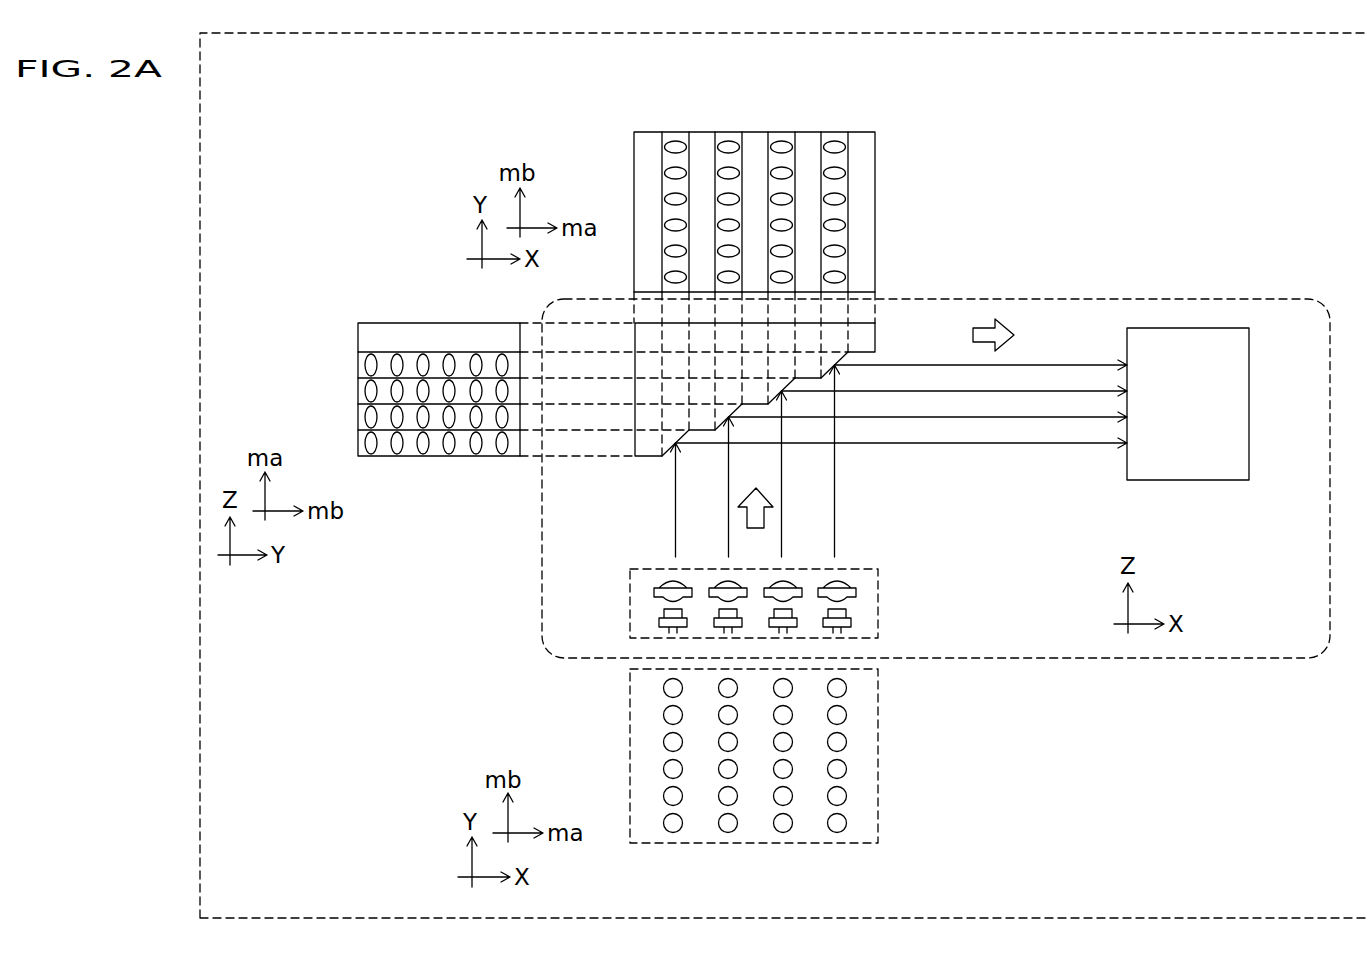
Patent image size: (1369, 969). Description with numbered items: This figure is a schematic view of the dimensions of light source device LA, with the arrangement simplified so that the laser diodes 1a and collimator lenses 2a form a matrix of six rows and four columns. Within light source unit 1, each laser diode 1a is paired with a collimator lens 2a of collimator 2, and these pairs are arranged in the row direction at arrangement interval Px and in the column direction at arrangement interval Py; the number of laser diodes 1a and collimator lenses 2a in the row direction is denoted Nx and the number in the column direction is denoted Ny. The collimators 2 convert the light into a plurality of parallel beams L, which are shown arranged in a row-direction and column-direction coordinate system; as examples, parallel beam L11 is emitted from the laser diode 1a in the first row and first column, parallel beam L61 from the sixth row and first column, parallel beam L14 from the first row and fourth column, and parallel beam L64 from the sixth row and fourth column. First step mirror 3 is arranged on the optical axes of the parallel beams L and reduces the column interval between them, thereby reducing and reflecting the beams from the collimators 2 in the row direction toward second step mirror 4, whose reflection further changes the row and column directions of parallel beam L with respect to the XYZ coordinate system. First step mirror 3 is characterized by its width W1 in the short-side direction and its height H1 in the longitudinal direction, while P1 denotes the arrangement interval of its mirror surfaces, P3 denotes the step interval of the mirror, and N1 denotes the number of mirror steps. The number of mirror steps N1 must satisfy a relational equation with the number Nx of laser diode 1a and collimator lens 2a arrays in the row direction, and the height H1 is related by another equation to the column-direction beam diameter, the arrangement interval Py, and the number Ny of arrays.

The light source unit 1 is at (951, 621).
The laser diode 1a is at (848, 622).
The collimator 2 is at (951, 582).
The collimator lens 2a is at (853, 592).
The first step mirror 3 is at (865, 338).
The second step mirror 4 is at (1249, 398).
The parallel beam L is at (835, 512).
The light source device LA is at (1190, 658).
The parallel beam L11 is at (673, 147).
The parallel beam L14 is at (835, 147).
The parallel beam L61 is at (673, 277).
The parallel beam L64 is at (835, 277).
The number of mirror steps N1 is at (653, 80).
The width of the mirror W1 is at (689, 132).
The arrangement interval of mirror surface P1 is at (834, 132).
The height of the mirror H1 is at (875, 132).
The arrangement interval in the column direction Py is at (673, 173).
The step interval of the mirror P3 is at (371, 391).
The arrangement interval in the row direction Px is at (673, 823).
The number of laser diodes and collimator lenses in the row direction Nx is at (848, 875).
The number of laser diodes and collimator lenses in the column direction Ny is at (938, 682).